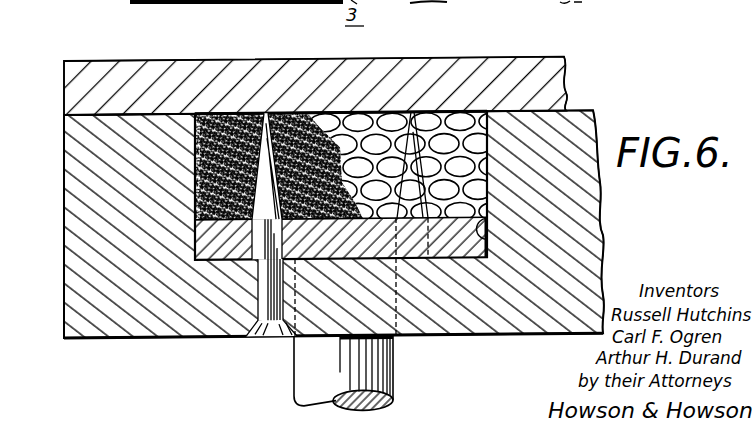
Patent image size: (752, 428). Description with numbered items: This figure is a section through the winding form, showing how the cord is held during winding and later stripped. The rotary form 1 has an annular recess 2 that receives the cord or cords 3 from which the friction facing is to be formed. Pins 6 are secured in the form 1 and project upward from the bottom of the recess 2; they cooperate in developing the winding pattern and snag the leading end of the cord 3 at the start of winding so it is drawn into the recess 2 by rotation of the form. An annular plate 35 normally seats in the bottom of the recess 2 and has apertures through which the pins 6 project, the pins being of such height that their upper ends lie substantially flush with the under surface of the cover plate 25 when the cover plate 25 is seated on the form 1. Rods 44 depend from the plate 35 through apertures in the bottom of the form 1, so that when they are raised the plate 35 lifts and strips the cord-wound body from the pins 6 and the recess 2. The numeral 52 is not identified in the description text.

The rotary form 1 is at (120, 206).
The annular recess 2 is at (339, 200).
The cord 3 is at (247, 115).
The pins 6 is at (264, 249).
The cover plate 25 is at (105, 92).
The annular plate 35 is at (230, 240).
The rods 44 is at (327, 378).
The granular refractory filling 52 is at (193, 165).